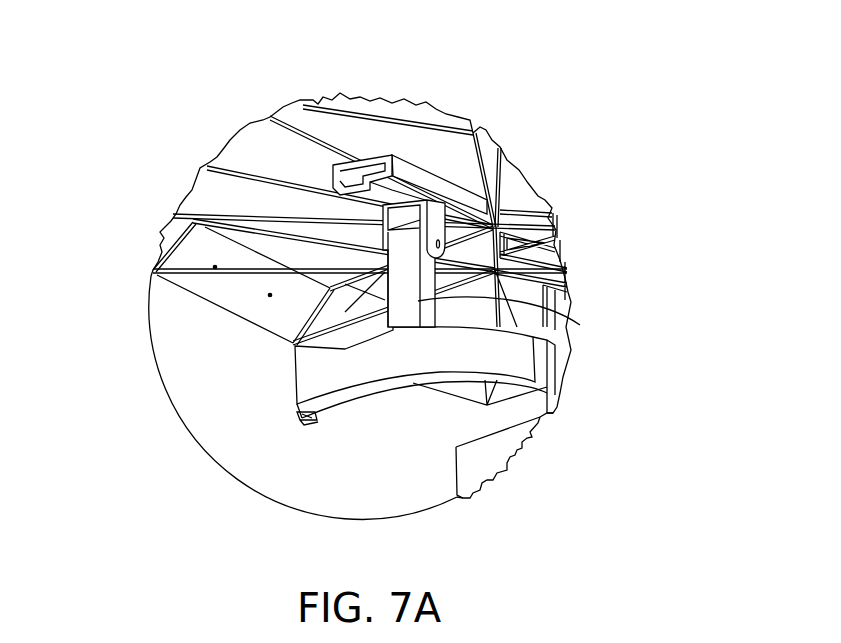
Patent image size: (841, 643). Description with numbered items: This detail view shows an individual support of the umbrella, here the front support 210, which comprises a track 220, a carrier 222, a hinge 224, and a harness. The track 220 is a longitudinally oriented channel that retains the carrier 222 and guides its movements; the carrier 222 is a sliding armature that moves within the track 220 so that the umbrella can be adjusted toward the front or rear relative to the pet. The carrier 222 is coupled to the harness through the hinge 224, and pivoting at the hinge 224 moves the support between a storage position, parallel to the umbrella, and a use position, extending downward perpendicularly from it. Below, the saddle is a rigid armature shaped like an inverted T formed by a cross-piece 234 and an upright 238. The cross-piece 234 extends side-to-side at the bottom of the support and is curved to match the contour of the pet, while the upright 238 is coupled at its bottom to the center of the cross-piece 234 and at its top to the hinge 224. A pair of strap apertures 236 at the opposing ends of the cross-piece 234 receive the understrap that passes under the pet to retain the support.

The front support 210 is at (407, 377).
The track 220 is at (413, 160).
The carrier 222 is at (498, 148).
The hinge 224 is at (500, 208).
The cross-piece 234 is at (307, 380).
The strap apertures 236 is at (300, 417).
The upright 238 is at (565, 320).